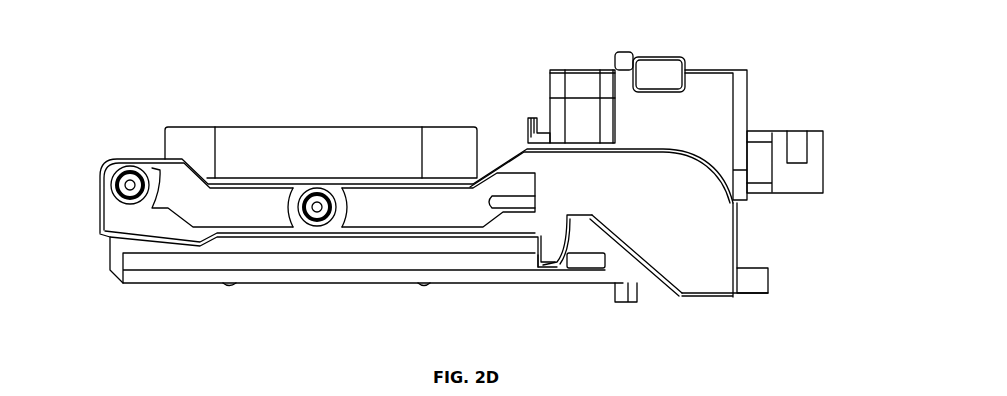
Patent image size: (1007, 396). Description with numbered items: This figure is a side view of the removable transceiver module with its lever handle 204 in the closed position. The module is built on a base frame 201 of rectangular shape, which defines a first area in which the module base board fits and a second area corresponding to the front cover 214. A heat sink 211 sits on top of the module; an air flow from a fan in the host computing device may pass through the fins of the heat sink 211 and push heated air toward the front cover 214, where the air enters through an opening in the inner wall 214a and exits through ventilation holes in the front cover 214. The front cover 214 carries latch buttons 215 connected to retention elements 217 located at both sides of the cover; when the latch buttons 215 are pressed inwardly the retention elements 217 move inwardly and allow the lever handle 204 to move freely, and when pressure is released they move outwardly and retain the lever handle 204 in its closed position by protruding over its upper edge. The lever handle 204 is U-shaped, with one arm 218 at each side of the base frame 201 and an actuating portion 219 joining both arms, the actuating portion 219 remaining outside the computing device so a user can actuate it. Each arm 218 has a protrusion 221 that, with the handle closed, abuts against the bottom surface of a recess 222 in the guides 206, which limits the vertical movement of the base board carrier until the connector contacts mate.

The base frame 201 is at (237, 295).
The lever handle 204 is at (740, 245).
The guides 206 is at (122, 263).
The heat sink 211 is at (343, 137).
The front cover 214 is at (722, 83).
The inner wall 214a is at (550, 90).
The latch buttons 215 is at (657, 60).
The retention elements 217 is at (577, 123).
The arm 218 is at (170, 178).
The actuating portion 219 is at (763, 280).
The protrusions 221 is at (545, 243).
The recesses 222 is at (562, 265).